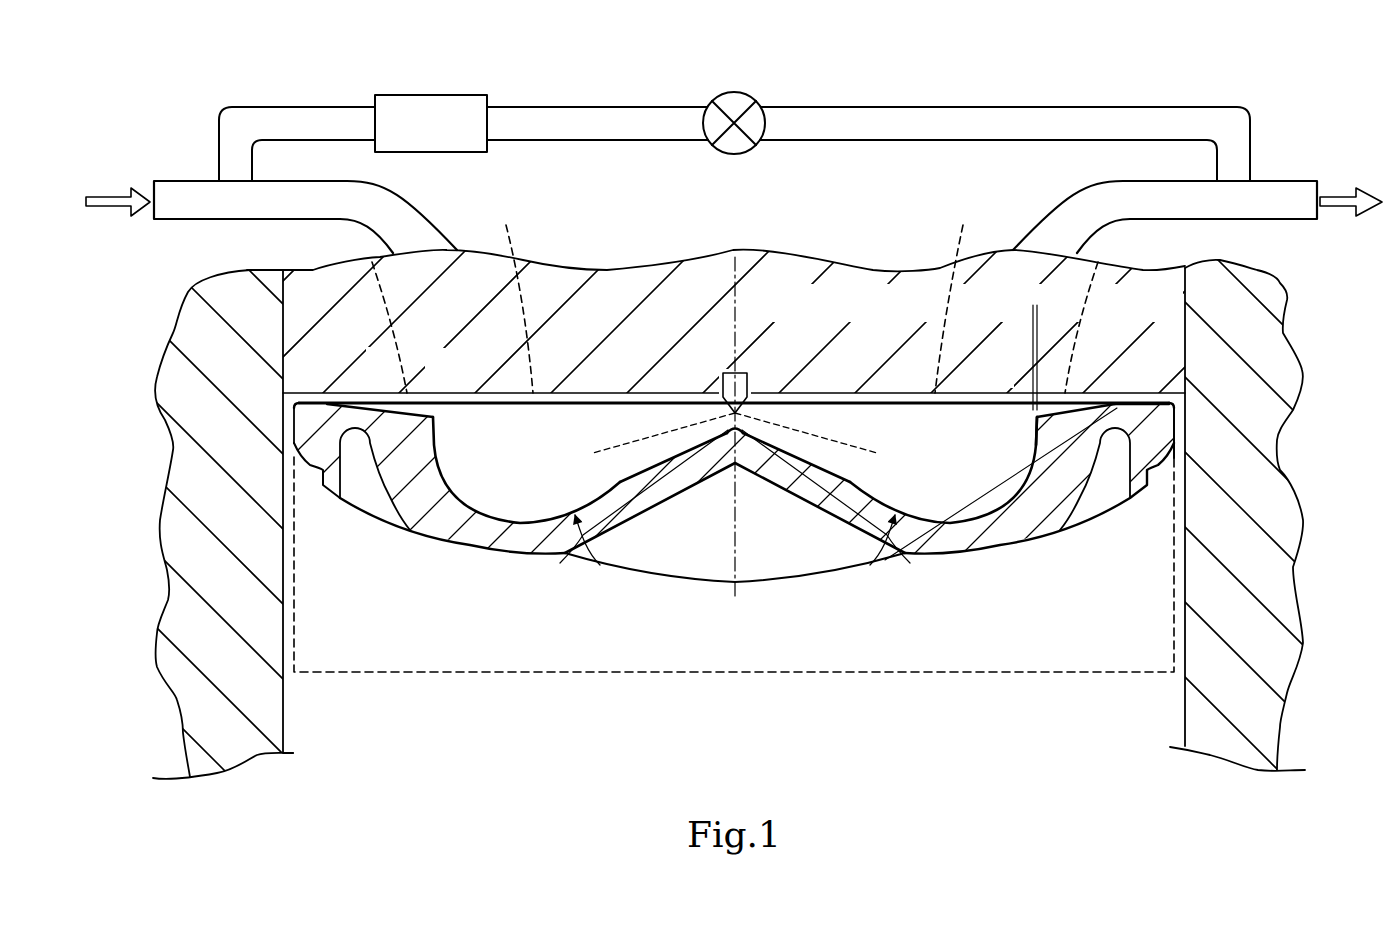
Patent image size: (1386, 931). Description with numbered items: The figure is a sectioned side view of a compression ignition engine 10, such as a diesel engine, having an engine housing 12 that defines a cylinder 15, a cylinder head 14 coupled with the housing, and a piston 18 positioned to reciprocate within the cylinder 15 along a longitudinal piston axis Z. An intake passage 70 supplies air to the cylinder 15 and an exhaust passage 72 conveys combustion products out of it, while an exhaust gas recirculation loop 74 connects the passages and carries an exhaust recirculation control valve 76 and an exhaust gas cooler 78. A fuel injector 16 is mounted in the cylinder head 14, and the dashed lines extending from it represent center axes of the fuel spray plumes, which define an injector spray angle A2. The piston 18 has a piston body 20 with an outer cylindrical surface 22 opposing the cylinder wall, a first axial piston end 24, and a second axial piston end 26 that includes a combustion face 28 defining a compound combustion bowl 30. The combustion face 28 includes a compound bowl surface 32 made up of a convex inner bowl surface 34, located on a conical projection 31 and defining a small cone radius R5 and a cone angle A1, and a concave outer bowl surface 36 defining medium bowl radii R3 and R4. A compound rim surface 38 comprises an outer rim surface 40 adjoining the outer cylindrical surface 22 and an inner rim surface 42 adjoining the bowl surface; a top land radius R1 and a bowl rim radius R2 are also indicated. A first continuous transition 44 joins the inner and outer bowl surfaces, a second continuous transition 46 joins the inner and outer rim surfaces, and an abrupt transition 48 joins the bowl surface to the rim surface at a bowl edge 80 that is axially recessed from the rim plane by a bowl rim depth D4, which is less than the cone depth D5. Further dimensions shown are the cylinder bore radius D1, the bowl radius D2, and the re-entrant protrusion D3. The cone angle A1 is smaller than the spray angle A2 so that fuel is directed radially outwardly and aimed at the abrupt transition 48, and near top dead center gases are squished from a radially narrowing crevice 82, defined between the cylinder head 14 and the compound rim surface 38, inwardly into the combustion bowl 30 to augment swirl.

The engine 10 is at (1158, 769).
The engine housing 12 is at (1277, 566).
The cylinder head 14 is at (326, 277).
The cylinder 15 is at (1185, 585).
The fuel injector 16 is at (748, 380).
The piston 18 is at (549, 592).
The piston body 20 is at (1003, 530).
The outer cylindrical surface 22 is at (1182, 408).
The first axial piston end 24 is at (1062, 672).
The second axial piston end 26 is at (349, 395).
The combustion face 28 is at (314, 397).
The compound combustion bowl 30 is at (1057, 530).
The conical projection 31 is at (631, 452).
The compound bowl surface 32 is at (1082, 505).
The inner bowl surface 34 is at (716, 428).
The outer bowl surface 36 is at (947, 526).
The compound rim surface 38 is at (1132, 393).
The outer rim surface 40 is at (1158, 391).
The inner rim surface 42 is at (1078, 393).
The first continuous transition 44 is at (902, 500).
The second continuous transition 46 is at (1114, 392).
The abrupt transition 48 is at (1031, 419).
The intake passage 70 is at (180, 220).
The exhaust passage 72 is at (1292, 220).
The exhaust gas recirculation loop 74 is at (963, 107).
The exhaust recirculation control valve 76 is at (733, 92).
The exhaust gas cooler 78 is at (433, 95).
The bowl edge 80 is at (440, 413).
The crevice 82 is at (413, 410).
The cylinder bore radius D1 is at (737, 288).
The bowl radius D2 is at (1031, 318).
The re-entrant protrusion D3 is at (1087, 362).
The bowl rim depth D4 is at (463, 350).
The cone depth D5 is at (753, 430).
The top land radius R1 is at (380, 414).
The bowl rim radius R2 is at (425, 424).
The bowl radius R3 is at (478, 506).
The bowl radius R4 is at (533, 516).
The cone radius R5 is at (729, 437).
The cone angle A1 is at (587, 535).
The injector spray angle A2 is at (600, 473).
The longitudinal piston axis Z is at (735, 555).